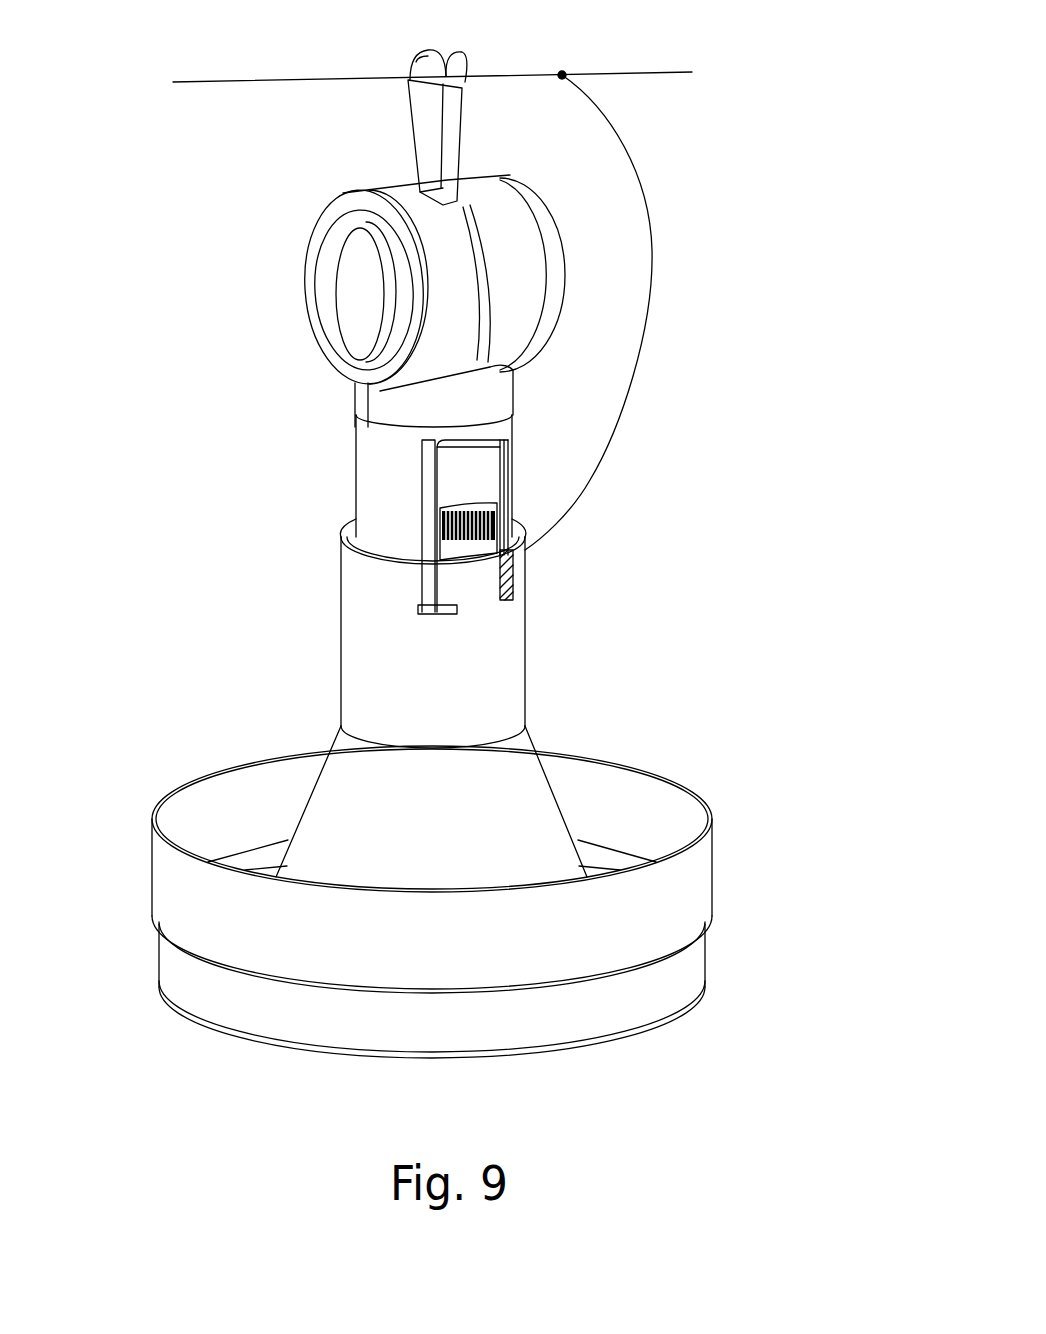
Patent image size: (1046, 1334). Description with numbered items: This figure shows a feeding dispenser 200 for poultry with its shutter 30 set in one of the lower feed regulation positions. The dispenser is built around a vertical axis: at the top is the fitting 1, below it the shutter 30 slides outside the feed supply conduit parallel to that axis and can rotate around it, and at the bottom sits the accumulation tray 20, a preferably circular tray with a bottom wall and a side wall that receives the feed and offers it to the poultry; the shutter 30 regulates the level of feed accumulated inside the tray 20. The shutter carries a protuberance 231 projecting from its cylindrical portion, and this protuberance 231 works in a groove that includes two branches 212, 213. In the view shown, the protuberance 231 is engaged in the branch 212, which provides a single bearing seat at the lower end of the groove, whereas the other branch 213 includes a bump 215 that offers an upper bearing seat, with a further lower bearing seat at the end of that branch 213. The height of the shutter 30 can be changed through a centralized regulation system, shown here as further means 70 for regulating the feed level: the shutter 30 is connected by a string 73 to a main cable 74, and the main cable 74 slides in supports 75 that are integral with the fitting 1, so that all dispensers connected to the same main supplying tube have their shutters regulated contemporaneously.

The fitting 1 is at (330, 316).
The accumulation tray 20 is at (217, 1002).
The shutter 30 is at (307, 700).
The means for regulating the feed level 70 is at (441, 283).
The string 73 is at (648, 242).
The main cable 74 is at (232, 82).
The support 75 is at (422, 130).
The feeding dispenser 200 is at (462, 648).
The branch 212 is at (503, 482).
The branch 213 is at (430, 480).
The bump 215 is at (430, 510).
The protuberance 231 is at (503, 557).